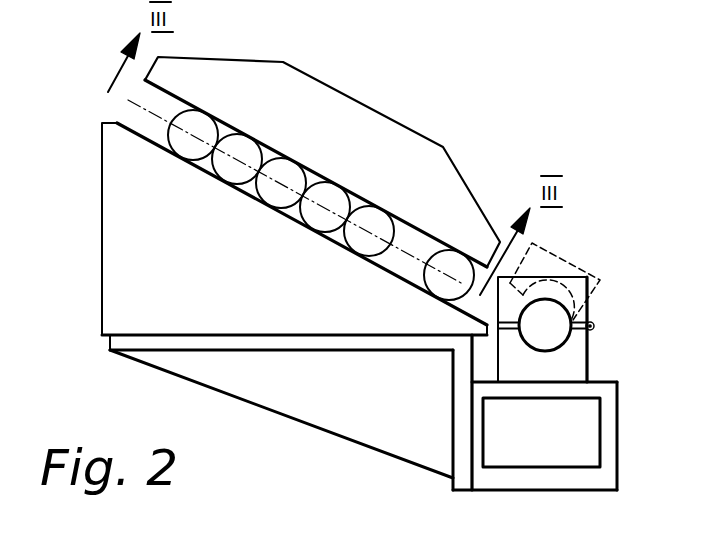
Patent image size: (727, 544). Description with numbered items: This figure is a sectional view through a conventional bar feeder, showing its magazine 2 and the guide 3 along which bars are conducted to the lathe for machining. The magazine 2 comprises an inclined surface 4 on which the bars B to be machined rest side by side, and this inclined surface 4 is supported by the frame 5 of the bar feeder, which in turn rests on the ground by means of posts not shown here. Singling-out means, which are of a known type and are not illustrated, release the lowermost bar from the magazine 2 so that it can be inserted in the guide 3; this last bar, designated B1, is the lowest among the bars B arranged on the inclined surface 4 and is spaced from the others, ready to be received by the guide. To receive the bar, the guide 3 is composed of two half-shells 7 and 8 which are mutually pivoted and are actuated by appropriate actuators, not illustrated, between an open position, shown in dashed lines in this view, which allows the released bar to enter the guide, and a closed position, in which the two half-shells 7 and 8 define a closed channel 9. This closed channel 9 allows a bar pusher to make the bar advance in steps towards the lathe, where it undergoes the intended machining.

The magazine 2 is at (434, 136).
The guide 3 is at (566, 266).
The inclined surface 4 is at (197, 170).
The frame 5 is at (322, 412).
The half-shell 7 is at (577, 305).
The half-shell 8 is at (577, 367).
The closed channel 9 is at (557, 338).
The bars B is at (285, 168).
The last bar B1 is at (437, 287).